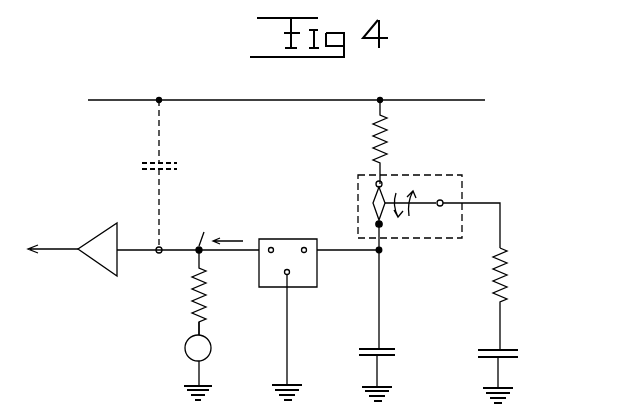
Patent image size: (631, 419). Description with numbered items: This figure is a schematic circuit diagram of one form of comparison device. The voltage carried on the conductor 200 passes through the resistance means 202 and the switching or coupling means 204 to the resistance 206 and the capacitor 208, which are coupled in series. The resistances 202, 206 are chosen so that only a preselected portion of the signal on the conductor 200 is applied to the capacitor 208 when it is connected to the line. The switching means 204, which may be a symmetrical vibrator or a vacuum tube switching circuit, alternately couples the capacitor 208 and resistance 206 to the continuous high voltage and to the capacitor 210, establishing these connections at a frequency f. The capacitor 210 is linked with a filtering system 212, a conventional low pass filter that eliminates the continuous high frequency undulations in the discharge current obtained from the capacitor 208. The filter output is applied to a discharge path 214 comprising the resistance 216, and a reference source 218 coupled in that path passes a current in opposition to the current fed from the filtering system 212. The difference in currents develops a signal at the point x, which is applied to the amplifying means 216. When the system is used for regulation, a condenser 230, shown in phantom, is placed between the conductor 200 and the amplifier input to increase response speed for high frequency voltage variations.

The conductor 200 is at (298, 101).
The resistance means 202 is at (372, 128).
The switching or coupling means 204 is at (439, 168).
The resistance 206 is at (545, 265).
The capacitor 208 is at (508, 358).
The capacitor 210 is at (390, 324).
The filtering system 212 is at (317, 288).
The discharge path 214 is at (159, 326).
The resistance / amplifying means 216 is at (100, 228).
The reference source 218 is at (212, 355).
The condenser 230 is at (145, 150).